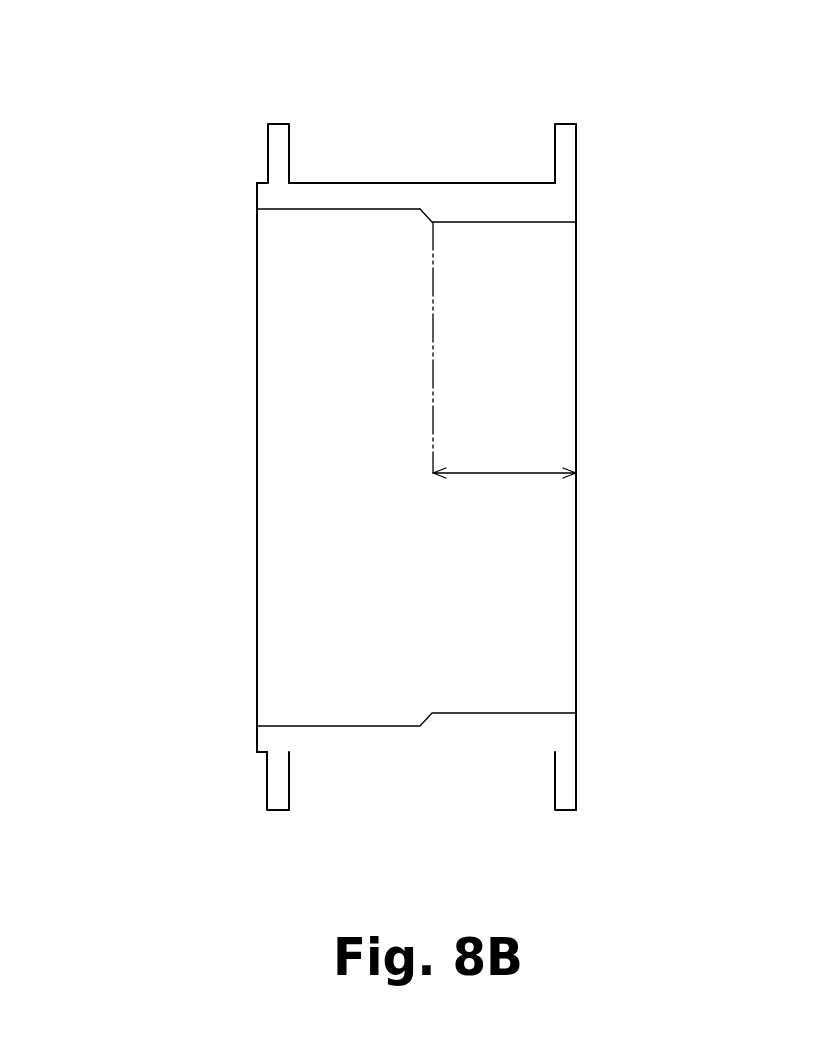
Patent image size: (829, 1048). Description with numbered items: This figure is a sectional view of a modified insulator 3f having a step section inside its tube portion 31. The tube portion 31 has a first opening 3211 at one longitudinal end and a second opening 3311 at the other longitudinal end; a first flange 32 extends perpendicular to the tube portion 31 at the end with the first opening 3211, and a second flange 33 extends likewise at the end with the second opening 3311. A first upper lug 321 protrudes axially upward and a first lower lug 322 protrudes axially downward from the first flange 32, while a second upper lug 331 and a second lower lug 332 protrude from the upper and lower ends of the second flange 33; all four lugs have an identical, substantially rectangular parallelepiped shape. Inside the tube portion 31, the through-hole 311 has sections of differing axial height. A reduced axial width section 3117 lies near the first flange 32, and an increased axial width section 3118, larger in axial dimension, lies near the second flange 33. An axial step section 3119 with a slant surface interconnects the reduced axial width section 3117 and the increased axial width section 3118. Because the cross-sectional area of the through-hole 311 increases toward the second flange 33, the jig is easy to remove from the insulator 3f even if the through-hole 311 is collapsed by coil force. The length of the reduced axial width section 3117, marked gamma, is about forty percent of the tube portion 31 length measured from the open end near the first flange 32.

The insulator 3f is at (118, 83).
The tube portion 31 is at (380, 184).
The through-hole 311 is at (283, 580).
The reduced axial width section 3117 is at (485, 223).
The increased axial width section 3118 is at (340, 210).
The axial step section 3119 is at (425, 213).
The first flange 32 is at (567, 192).
The first upper lug 321 is at (565, 138).
The first lower lug 322 is at (566, 768).
The first opening 3211 is at (578, 533).
The second flange 33 is at (256, 196).
The second upper lug 331 is at (278, 137).
The second lower lug 332 is at (275, 762).
The second opening 3311 is at (257, 457).